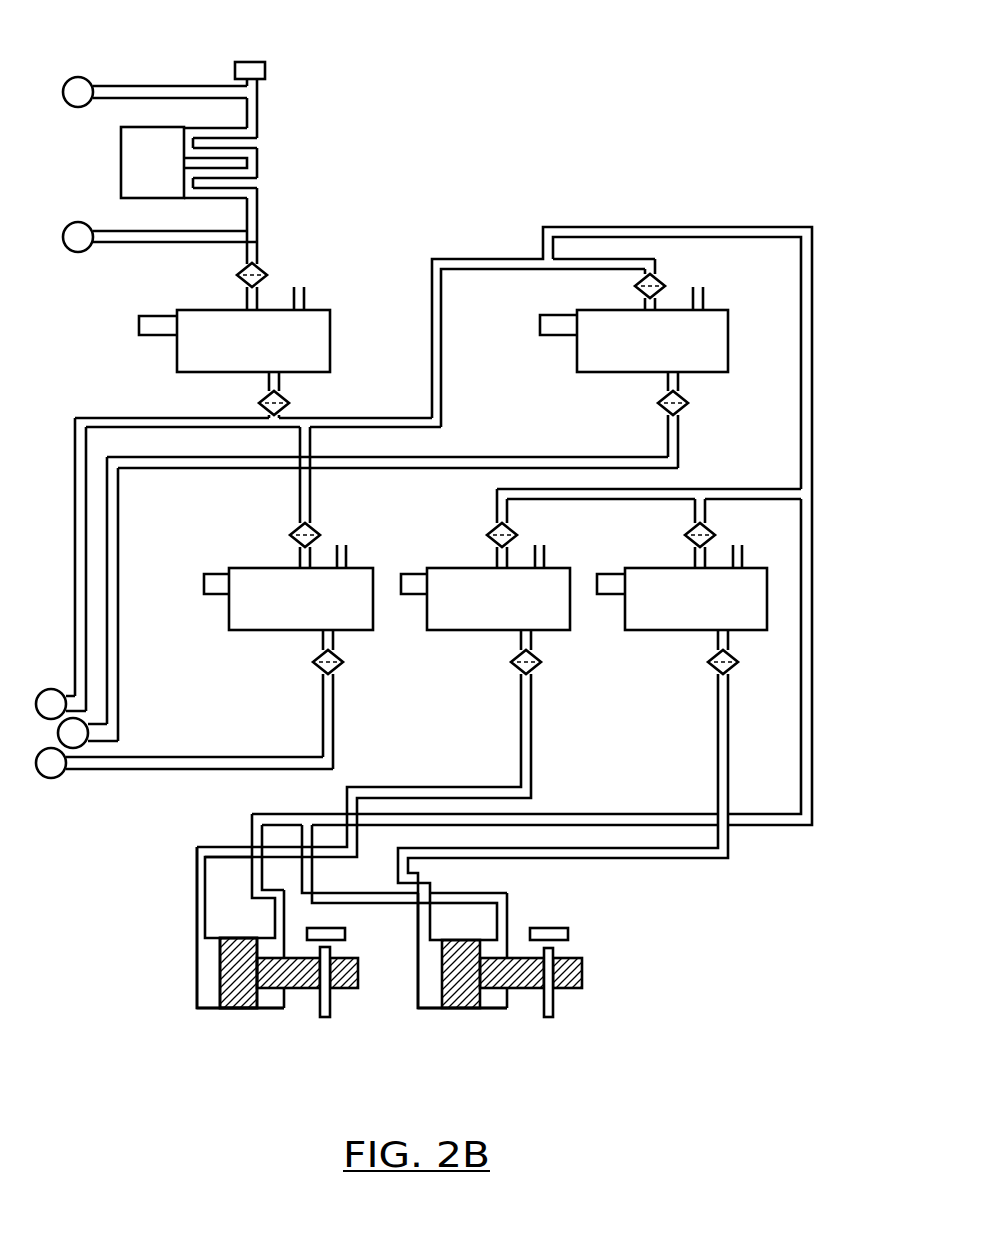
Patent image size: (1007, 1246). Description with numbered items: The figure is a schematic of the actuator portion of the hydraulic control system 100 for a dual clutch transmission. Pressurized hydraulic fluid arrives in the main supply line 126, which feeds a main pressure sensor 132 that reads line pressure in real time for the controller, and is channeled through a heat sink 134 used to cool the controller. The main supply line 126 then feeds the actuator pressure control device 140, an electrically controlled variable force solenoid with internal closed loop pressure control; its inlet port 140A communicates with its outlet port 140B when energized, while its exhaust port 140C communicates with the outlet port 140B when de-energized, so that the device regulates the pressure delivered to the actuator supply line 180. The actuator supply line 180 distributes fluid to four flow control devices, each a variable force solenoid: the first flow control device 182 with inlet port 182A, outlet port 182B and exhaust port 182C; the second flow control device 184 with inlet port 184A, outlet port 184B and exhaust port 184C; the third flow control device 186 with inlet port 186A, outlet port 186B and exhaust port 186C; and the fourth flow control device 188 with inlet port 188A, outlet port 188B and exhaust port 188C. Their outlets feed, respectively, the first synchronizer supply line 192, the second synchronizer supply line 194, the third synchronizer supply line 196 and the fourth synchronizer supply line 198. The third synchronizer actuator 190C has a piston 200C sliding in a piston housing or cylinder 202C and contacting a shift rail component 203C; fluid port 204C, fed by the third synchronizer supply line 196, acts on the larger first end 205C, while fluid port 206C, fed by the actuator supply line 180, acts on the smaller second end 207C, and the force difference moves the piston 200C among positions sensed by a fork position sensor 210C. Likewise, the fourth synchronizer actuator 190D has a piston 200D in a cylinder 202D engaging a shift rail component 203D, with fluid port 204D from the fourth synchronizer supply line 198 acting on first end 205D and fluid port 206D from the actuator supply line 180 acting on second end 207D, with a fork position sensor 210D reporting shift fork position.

The hydraulic control system 100 is at (598, 58).
The main supply line 126 is at (112, 84).
The main pressure sensor 132 is at (268, 70).
The heat sink 134 is at (120, 158).
The actuator pressure control device 140 is at (331, 343).
The inlet port 140A is at (249, 304).
The outlet port 140B is at (270, 380).
The exhaust port 140C is at (306, 300).
The actuator supply line 180 is at (513, 258).
The first flow control device 182 is at (729, 343).
The inlet port 182A is at (647, 303).
The outlet port 182B is at (670, 380).
The exhaust port 182C is at (705, 300).
The second flow control device 184 is at (228, 607).
The inlet port 184A is at (301, 556).
The outlet port 184B is at (325, 638).
The exhaust port 184C is at (343, 546).
The third flow control device 186 is at (428, 607).
The inlet port 186A is at (498, 556).
The outlet port 186B is at (522, 638).
The exhaust port 186C is at (541, 546).
The fourth flow control device 188 is at (626, 607).
The inlet port 188A is at (696, 556).
The outlet port 188B is at (720, 638).
The exhaust port 188C is at (768, 535).
The first synchronizer supply line 192 is at (119, 690).
The second synchronizer supply line 194 is at (334, 722).
The third synchronizer supply line 196 is at (532, 727).
The fourth synchronizer supply line 198 is at (729, 752).
The third synchronizer actuator 190C is at (245, 1022).
The piston 200C is at (226, 992).
The piston housing or cylinder 202C is at (203, 1003).
The shift rail component 203C is at (332, 1004).
The fluid port 204C is at (203, 930).
The first end 205C is at (221, 973).
The fluid port 206C is at (278, 935).
The second end 207C is at (258, 994).
The fork position sensor 210C is at (346, 932).
The fourth synchronizer actuator 190D is at (468, 1024).
The piston 200D is at (463, 921).
The piston housing or cylinder 202D is at (422, 1008).
The shift rail component 203D is at (556, 1004).
The fluid port 204D is at (418, 938).
The first end 205D is at (443, 980).
The fluid port 206D is at (495, 910).
The second end 207D is at (482, 992).
The fork position sensor 210D is at (568, 932).